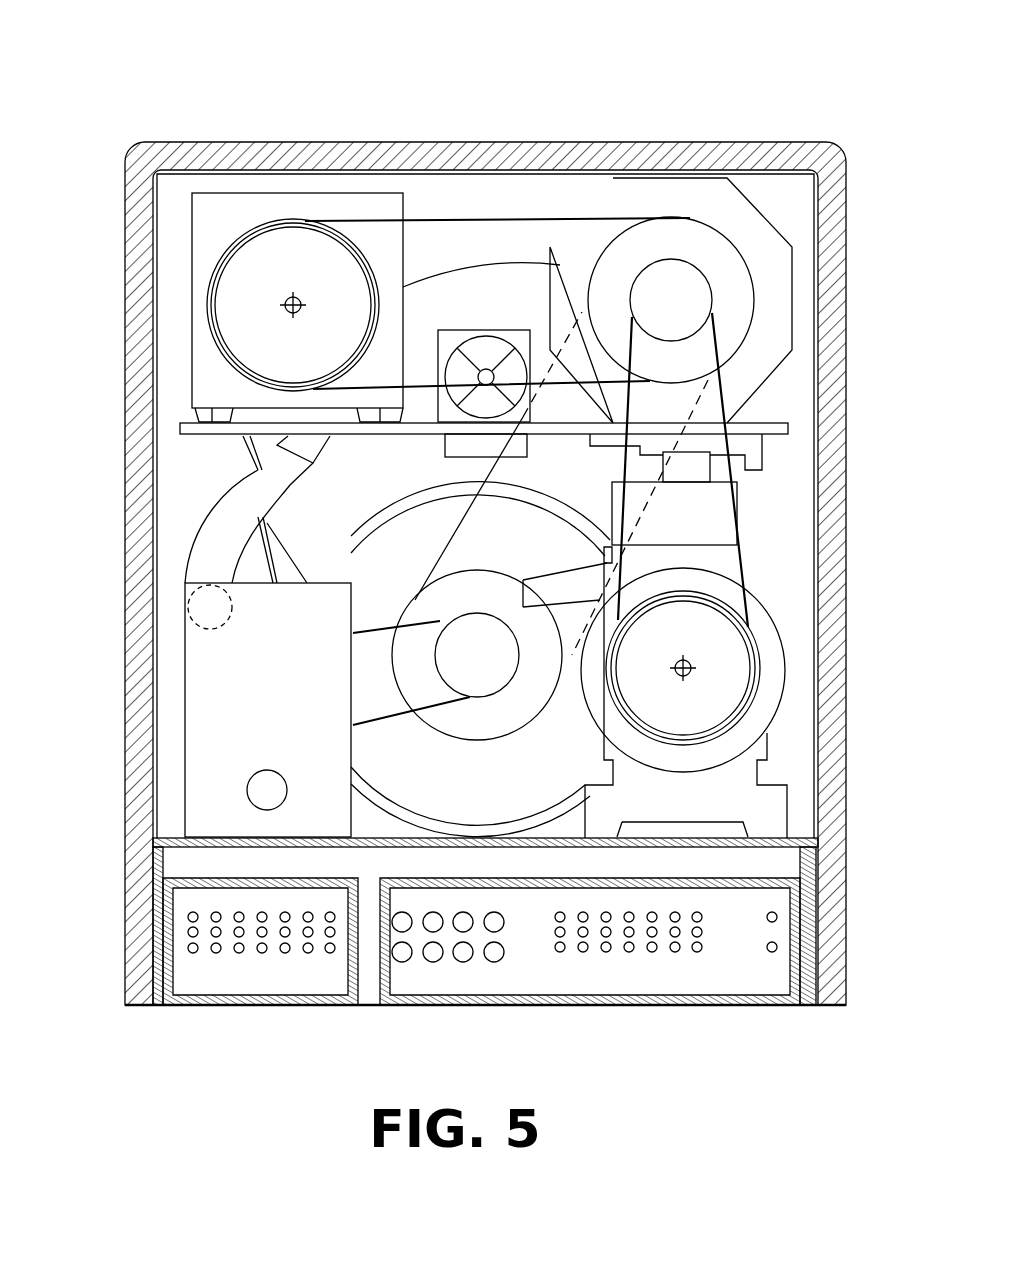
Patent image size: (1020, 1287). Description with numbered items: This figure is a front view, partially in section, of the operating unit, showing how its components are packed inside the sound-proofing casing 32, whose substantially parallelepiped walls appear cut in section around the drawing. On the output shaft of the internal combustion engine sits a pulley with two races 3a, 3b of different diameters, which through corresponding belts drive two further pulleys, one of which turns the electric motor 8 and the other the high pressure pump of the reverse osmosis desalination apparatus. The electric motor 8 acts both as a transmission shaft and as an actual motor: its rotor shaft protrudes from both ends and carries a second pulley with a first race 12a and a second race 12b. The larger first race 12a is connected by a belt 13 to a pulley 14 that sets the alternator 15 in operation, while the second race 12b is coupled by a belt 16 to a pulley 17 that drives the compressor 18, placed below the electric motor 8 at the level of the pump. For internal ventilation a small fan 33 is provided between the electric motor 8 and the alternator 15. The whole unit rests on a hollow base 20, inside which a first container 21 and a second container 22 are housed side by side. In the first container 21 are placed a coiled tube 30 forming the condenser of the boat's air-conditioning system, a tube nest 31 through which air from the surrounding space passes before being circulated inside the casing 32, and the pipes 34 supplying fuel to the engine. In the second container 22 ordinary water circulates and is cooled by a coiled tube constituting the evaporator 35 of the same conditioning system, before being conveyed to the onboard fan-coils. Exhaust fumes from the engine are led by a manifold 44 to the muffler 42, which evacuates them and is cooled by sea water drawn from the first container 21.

The race 3a is at (498, 679).
The race 3b is at (496, 606).
The electric motor 8 is at (667, 197).
The first race 12a is at (725, 293).
The second race 12b is at (702, 320).
The belt 13 is at (430, 222).
The pulley 14 is at (282, 297).
The alternator 15 is at (212, 213).
The belt 16 is at (745, 572).
The pulley 17 is at (712, 657).
The compressor 18 is at (678, 532).
The base 20 is at (153, 948).
The first container 21 is at (592, 1008).
The second container 22 is at (200, 1006).
The coiled tube 30 is at (671, 964).
The tube nest 31 is at (478, 968).
The sound-proofing casing 32 is at (743, 143).
The small fan 33 is at (463, 335).
The pipes 34 is at (772, 955).
The evaporator 35 is at (301, 966).
The muffler 42 is at (276, 729).
The manifold 44 is at (290, 482).